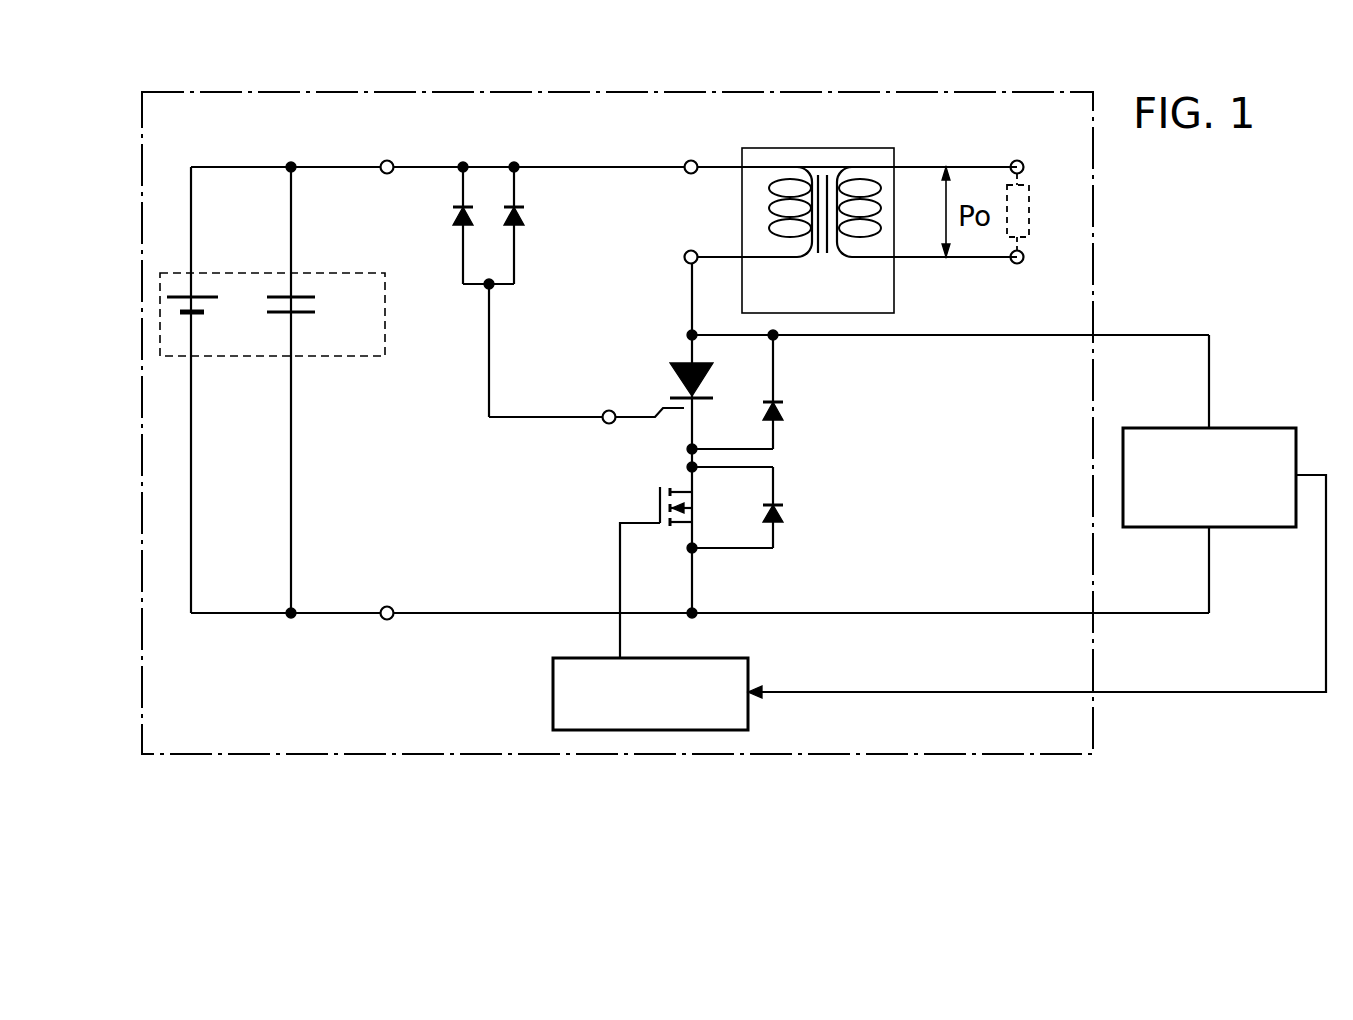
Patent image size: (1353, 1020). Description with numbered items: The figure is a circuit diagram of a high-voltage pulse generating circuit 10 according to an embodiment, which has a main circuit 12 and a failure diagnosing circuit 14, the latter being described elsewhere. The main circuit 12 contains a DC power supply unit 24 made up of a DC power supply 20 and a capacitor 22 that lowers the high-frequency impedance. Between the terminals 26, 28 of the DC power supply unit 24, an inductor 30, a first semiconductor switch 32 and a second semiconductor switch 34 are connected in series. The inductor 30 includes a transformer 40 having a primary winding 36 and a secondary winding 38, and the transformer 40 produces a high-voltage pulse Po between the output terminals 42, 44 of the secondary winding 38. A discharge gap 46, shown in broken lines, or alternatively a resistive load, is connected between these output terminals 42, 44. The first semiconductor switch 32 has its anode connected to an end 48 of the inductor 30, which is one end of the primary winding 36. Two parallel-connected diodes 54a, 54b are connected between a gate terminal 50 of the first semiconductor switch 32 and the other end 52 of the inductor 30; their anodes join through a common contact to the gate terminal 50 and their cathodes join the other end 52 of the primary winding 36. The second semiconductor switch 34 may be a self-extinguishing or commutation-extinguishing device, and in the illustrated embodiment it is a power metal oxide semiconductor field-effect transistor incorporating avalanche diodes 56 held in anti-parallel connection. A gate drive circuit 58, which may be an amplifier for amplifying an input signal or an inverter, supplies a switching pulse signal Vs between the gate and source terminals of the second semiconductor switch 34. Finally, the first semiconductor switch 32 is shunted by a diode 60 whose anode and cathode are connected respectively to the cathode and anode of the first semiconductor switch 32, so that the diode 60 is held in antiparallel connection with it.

The high-voltage pulse generating circuit 10 is at (1190, 175).
The main circuit 12 is at (1095, 236).
The failure diagnosing circuit 14 is at (1278, 427).
The DC power supply 20 is at (208, 306).
The capacitor 22 is at (318, 305).
The DC power supply unit 24 is at (272, 390).
The terminal 26 is at (387, 160).
The terminal 28 is at (387, 620).
The inductor 30 is at (857, 208).
The first semiconductor switch 32 is at (669, 378).
The second semiconductor switch 34 is at (638, 506).
The primary winding 36 is at (760, 225).
The secondary winding 38 is at (880, 207).
The transformer 40 is at (824, 166).
The output terminal 42 is at (1017, 160).
The output terminal 44 is at (1017, 264).
The discharge gap 46 is at (1030, 212).
The end of the inductor 48 is at (684, 257).
The gate terminal 50 is at (609, 424).
The other end of the inductor 52 is at (692, 160).
The diode 54a is at (528, 213).
The diode 54b is at (456, 211).
The avalanche diodes 56 is at (790, 508).
The gate drive circuit 58 is at (552, 691).
The diode 60 is at (790, 411).